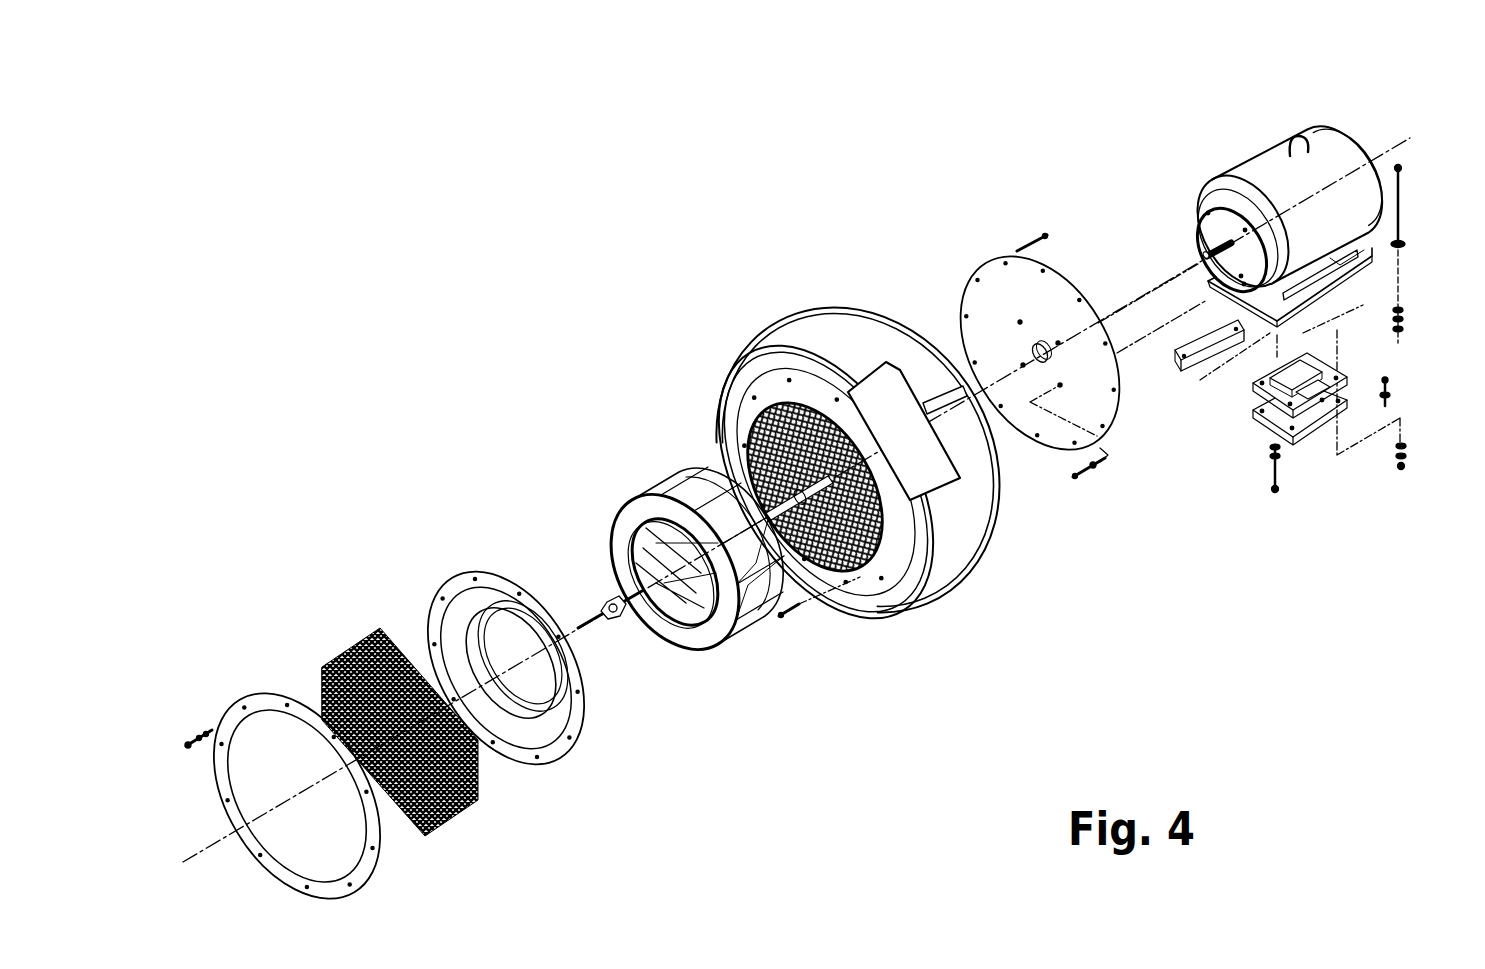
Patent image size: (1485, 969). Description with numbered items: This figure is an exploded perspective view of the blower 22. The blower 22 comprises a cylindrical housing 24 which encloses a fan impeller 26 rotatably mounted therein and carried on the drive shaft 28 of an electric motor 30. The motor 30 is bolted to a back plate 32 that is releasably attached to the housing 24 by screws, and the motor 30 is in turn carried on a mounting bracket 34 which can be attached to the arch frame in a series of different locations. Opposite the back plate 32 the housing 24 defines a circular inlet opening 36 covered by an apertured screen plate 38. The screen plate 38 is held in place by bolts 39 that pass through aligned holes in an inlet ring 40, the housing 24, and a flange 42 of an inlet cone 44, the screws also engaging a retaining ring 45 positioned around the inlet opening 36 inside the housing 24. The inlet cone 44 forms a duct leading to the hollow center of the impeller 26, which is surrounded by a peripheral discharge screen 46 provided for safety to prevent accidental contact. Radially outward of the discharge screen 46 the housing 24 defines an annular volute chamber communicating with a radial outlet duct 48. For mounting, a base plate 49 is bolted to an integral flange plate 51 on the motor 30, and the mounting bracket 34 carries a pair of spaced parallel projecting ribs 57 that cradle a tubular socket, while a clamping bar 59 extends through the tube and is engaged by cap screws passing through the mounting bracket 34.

The blower 22 is at (827, 262).
The cylindrical housing 24 is at (947, 570).
The fan impeller 26 is at (692, 641).
The drive shaft 28 is at (1206, 250).
The electric motor 30 is at (1233, 128).
The back plate 32 is at (1106, 404).
The mounting bracket 34 is at (1256, 384).
The inlet opening 36 is at (830, 500).
The screen plate 38 is at (333, 657).
The bolts 39 is at (185, 740).
The inlet ring 40 is at (256, 858).
The flange 42 is at (461, 578).
The inlet cone 44 is at (533, 747).
The retaining ring 45 is at (897, 488).
The peripheral discharge screen 46 is at (830, 500).
The radial outlet duct 48 is at (832, 623).
The base plate 49 is at (1338, 262).
The flange plate 51 is at (1360, 246).
The projecting ribs 57 is at (1324, 398).
The clamping bar 59 is at (1204, 331).